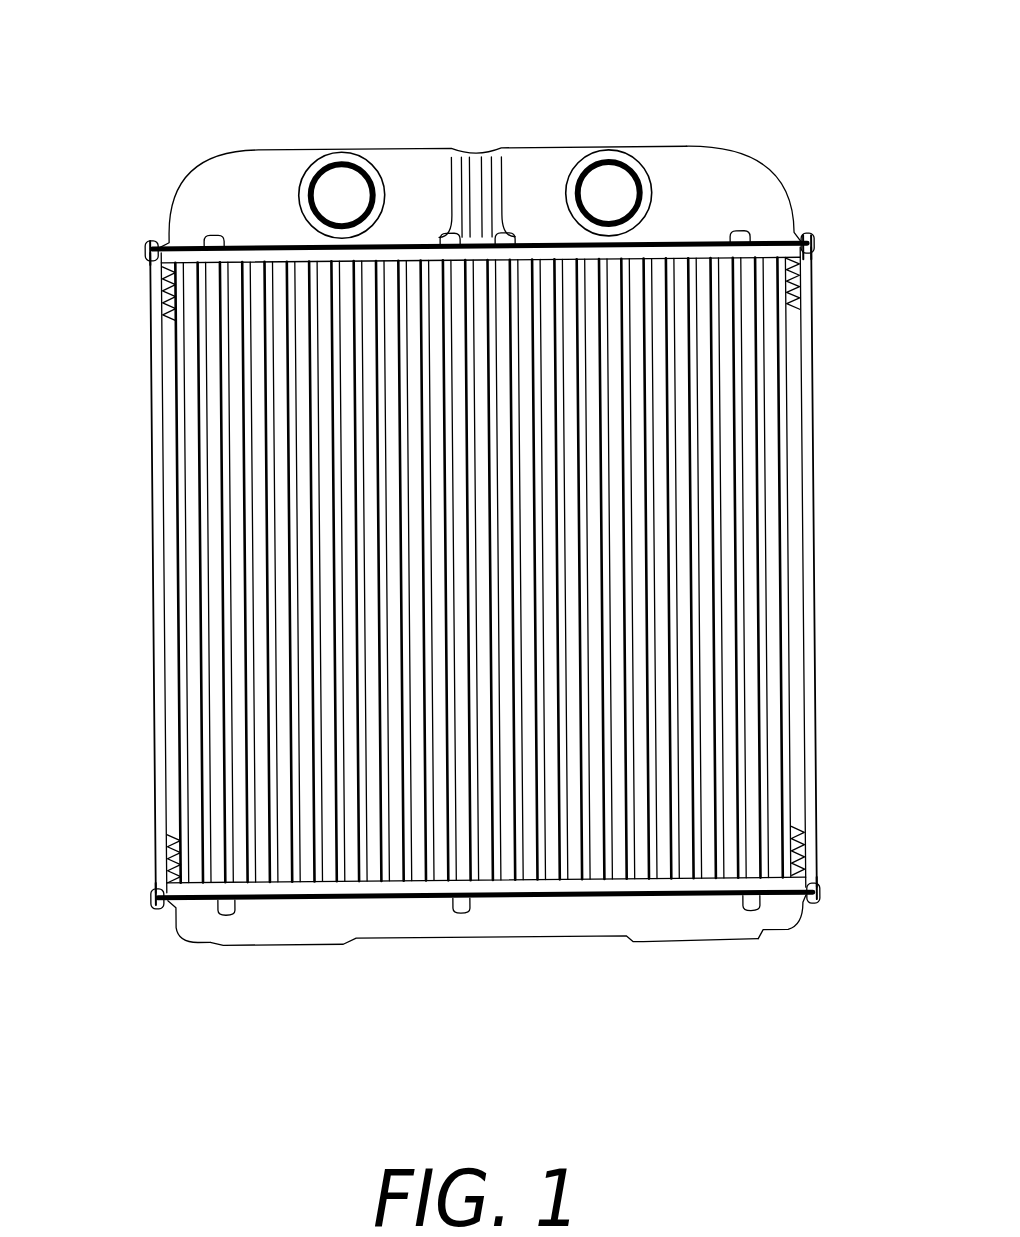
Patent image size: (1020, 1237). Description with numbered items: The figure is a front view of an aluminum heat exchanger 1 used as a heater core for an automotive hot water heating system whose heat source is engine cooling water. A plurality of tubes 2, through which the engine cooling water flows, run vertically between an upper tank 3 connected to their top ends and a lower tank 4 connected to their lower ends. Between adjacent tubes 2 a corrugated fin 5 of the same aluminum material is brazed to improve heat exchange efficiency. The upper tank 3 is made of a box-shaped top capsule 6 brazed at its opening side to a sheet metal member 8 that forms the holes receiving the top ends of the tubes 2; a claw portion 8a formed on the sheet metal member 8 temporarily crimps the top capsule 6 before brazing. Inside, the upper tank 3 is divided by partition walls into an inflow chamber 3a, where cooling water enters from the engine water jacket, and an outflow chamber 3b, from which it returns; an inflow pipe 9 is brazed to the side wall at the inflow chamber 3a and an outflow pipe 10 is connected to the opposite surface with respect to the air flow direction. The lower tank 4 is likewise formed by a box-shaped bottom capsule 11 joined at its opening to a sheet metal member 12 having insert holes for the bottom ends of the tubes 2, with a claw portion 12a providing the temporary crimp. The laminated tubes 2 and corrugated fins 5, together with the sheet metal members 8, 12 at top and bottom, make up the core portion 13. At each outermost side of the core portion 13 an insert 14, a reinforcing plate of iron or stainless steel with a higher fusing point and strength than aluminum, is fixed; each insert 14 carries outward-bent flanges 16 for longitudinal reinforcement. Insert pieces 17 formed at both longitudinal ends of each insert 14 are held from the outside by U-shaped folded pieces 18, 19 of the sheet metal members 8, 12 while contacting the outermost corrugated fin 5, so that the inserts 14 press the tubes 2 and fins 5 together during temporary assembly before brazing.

The aluminum heat exchanger 1 is at (183, 142).
The tubes 2 is at (780, 605).
The upper tank 3 is at (155, 205).
The inflow chamber 3a is at (538, 178).
The outflow chamber 3b is at (415, 182).
The lower tank 4 is at (180, 958).
The corrugated fin 5 is at (800, 826).
The top capsule 6 is at (678, 173).
The sheet metal member 8 is at (673, 253).
The claw portion 8a is at (742, 232).
The inflow pipe 9 is at (602, 155).
The outflow pipe 10 is at (322, 165).
The bottom capsule 11 is at (400, 917).
The sheet metal member 12 is at (577, 882).
The claw portion 12a is at (750, 905).
The core portion 13 is at (832, 252).
The inserts 14 is at (158, 626).
The flanges 16 is at (157, 716).
The insert pieces 17 is at (150, 260).
The U-shaped folded pieces 18 is at (150, 243).
The U-shaped folded pieces 19 is at (157, 900).